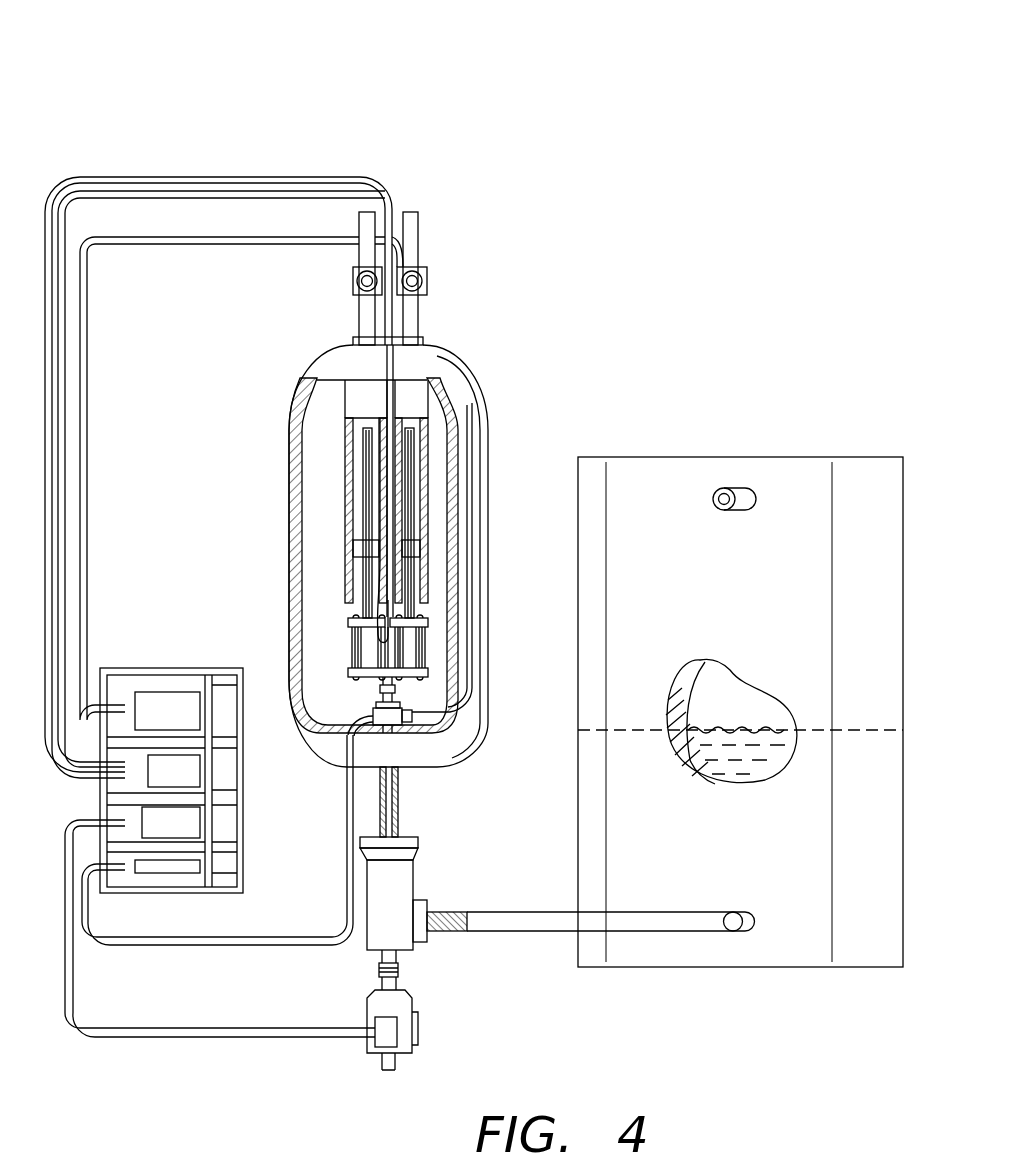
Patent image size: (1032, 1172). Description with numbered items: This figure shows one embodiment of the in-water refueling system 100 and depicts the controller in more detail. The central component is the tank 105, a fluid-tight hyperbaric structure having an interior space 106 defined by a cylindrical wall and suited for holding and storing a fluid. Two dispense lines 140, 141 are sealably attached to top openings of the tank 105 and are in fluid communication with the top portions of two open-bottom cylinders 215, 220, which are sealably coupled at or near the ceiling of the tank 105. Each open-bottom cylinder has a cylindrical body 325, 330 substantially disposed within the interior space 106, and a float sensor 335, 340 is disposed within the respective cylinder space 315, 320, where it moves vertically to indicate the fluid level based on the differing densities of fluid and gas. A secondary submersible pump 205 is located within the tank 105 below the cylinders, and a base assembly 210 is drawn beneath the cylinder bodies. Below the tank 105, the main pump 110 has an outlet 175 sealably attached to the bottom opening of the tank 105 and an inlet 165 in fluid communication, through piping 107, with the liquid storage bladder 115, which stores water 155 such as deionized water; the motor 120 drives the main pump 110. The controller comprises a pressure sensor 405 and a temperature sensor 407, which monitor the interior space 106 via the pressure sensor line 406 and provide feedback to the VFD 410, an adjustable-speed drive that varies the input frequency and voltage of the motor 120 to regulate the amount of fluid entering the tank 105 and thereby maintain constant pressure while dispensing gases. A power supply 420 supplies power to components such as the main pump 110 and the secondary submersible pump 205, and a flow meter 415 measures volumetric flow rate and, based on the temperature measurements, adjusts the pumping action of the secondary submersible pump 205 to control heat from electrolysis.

The in-water refueling system 100 is at (682, 226).
The tank 105 is at (310, 356).
The interior space 106 is at (322, 582).
The piping 107 is at (533, 931).
The main pump 110 is at (370, 918).
The liquid storage bladder 115 is at (814, 448).
The motor 120 is at (375, 1018).
The dispense line 140 is at (360, 312).
The dispense line 141 is at (418, 312).
The water 155 is at (446, 912).
The inlet 165 is at (443, 931).
The outlet 175 is at (400, 832).
The secondary submersible pump 205 is at (398, 700).
The base plate assembly 210 is at (410, 647).
The open-bottom cylinder 215 is at (336, 418).
The open-bottom cylinder 220 is at (438, 418).
The cylinder space 315 is at (345, 468).
The cylinder space 320 is at (428, 468).
The cylindrical body 325 is at (350, 508).
The cylindrical body 330 is at (414, 505).
The float sensor 335 is at (353, 548).
The float sensor 340 is at (426, 545).
The pressure sensor 405 is at (190, 692).
The pressure sensor line 406 is at (222, 237).
The temperature sensor 407 is at (120, 692).
The VFD 410 is at (207, 820).
The flow meter 415 is at (207, 864).
The power supply 420 is at (207, 775).